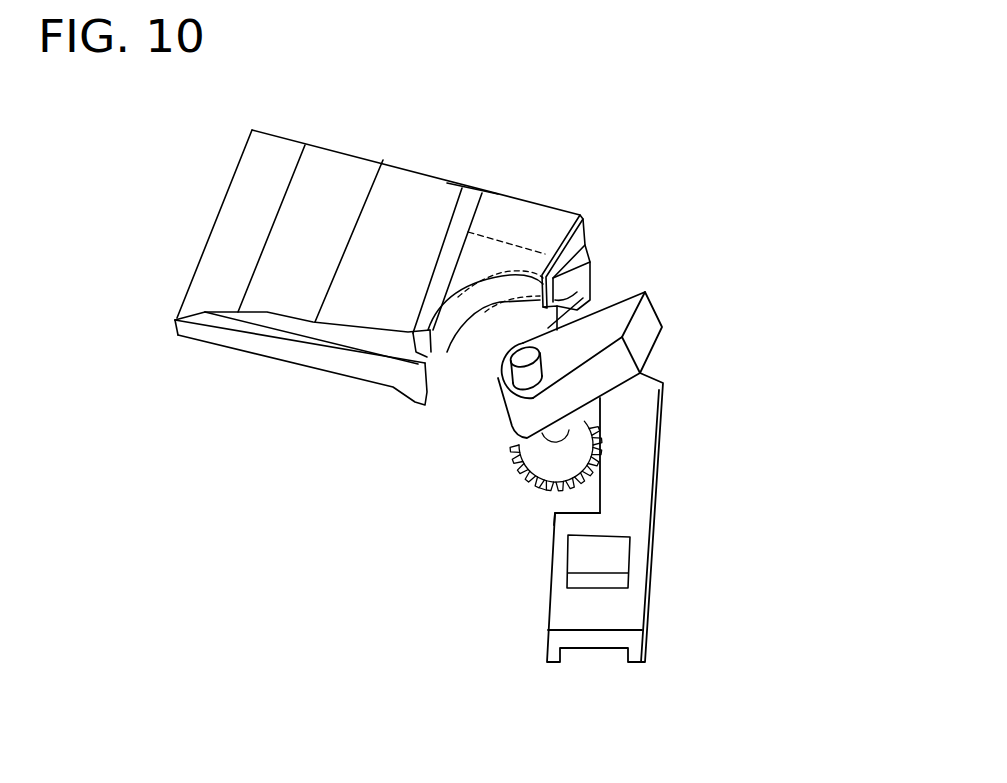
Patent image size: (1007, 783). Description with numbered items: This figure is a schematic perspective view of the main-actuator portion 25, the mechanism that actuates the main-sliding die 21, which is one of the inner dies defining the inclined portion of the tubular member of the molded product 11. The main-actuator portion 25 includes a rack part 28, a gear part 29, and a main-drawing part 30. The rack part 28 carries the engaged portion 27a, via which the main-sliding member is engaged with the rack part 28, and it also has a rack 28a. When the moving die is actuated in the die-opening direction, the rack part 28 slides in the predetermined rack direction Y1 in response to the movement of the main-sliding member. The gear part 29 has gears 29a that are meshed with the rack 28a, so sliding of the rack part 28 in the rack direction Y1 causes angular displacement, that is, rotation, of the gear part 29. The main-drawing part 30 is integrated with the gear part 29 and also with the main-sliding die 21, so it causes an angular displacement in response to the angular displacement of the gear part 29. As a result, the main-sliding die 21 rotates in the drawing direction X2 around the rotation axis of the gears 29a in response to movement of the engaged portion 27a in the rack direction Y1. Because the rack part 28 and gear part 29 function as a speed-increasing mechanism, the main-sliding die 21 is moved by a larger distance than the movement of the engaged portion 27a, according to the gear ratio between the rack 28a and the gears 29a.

The molded product 11 is at (457, 153).
The main-sliding die 21 is at (497, 275).
The main-actuator portion 25 is at (683, 349).
The engaged portion 27a is at (620, 545).
The rack part 28 is at (637, 467).
The rack 28a is at (597, 490).
The gear part 29 is at (507, 448).
The gears 29a is at (540, 488).
The main-drawing part 30 is at (622, 293).
The drawing direction X2 is at (552, 240).
The rack direction Y1 is at (600, 557).